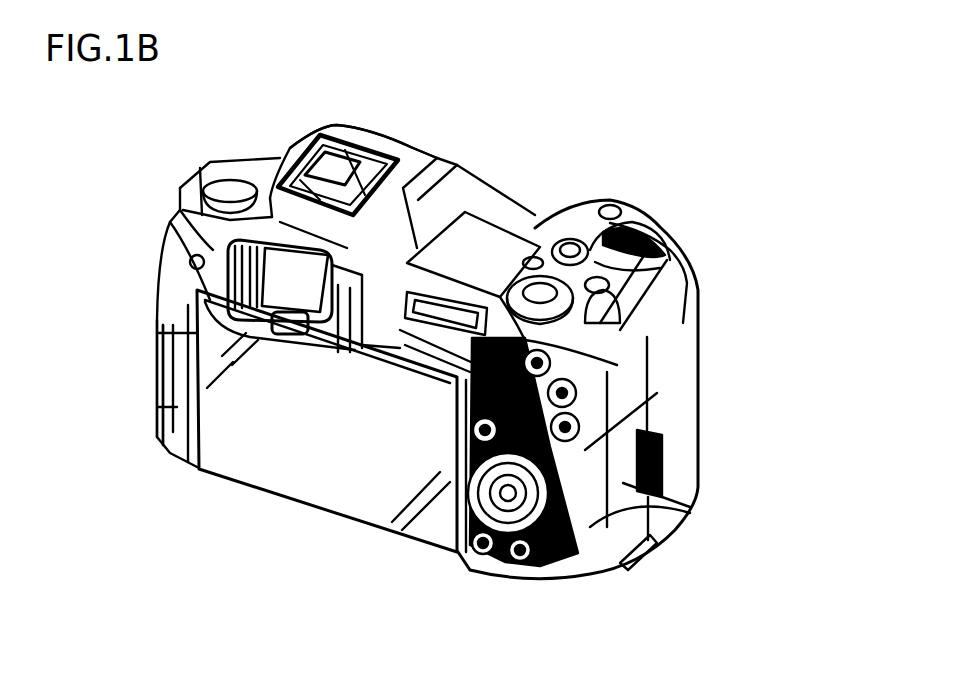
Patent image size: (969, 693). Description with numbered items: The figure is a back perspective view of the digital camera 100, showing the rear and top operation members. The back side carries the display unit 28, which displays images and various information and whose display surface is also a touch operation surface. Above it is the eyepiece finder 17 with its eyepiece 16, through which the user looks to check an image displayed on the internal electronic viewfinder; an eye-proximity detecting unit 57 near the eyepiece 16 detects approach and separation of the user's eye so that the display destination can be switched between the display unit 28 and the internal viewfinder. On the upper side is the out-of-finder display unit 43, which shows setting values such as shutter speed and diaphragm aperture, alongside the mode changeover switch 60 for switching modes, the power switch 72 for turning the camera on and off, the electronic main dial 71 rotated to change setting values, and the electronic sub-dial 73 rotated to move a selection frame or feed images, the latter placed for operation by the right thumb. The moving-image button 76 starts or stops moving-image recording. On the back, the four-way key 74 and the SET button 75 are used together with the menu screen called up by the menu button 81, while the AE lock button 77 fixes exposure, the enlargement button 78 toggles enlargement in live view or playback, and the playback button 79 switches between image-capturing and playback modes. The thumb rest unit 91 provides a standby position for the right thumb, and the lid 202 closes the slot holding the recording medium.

The digital camera 100 is at (650, 153).
The eyepiece 16 is at (278, 268).
The eyepiece finder 17 is at (443, 155).
The display unit 28 is at (293, 462).
The out-of-finder display unit 43 is at (483, 233).
The eye-proximity detecting unit 57 is at (197, 313).
The mode changeover switch 60 is at (543, 290).
The electronic main dial 71 is at (613, 205).
The power switch 72 is at (227, 187).
The electronic sub-dial 73 is at (657, 272).
The four-way key 74 is at (530, 556).
The SET button 75 is at (450, 547).
The moving-image button 76 is at (573, 247).
The AE lock button 77 is at (568, 388).
The enlargement button 78 is at (571, 424).
The playback button 79 is at (487, 560).
The menu button 81 is at (188, 262).
The thumb rest unit 91 is at (552, 336).
The lid 202 is at (690, 513).